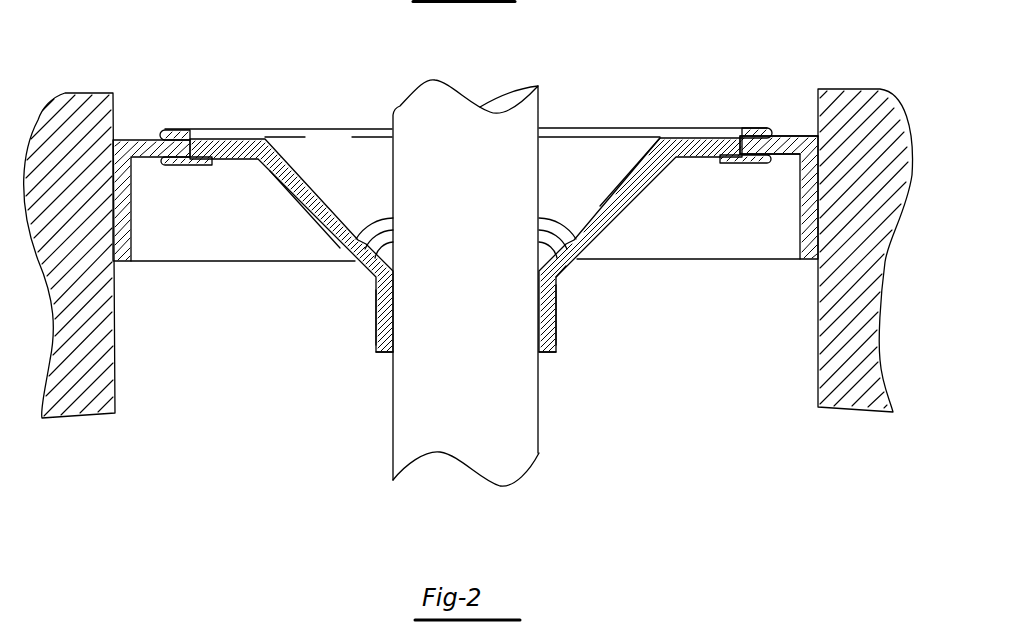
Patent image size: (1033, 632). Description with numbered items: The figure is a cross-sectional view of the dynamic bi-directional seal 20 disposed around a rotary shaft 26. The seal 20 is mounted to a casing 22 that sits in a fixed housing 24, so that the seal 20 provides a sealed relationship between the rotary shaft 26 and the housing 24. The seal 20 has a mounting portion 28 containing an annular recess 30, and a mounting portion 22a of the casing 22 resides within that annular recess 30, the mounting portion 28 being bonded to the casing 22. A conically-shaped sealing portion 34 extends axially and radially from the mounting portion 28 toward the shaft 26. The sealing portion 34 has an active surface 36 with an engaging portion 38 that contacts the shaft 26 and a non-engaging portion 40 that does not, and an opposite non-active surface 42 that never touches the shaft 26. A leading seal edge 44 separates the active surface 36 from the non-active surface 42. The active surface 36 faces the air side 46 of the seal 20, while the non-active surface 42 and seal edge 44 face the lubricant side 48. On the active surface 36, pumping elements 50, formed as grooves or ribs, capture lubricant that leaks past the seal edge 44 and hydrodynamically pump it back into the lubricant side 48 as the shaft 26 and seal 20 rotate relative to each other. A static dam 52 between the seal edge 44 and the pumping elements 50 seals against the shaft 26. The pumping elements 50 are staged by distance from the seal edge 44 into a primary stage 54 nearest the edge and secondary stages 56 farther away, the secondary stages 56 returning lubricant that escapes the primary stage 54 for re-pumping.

The dynamic bi-directional seal 20 is at (653, 40).
The casing 22 is at (807, 250).
The mounting portion of casing 22a is at (757, 148).
The fixed housing 24 is at (825, 360).
The rotary shaft 26 is at (517, 463).
The mounting portion 28 is at (734, 127).
The annular recess 30 is at (738, 152).
The sealing portion 34 is at (636, 197).
The active surface 36 is at (334, 207).
The engaging portion 38 is at (517, 305).
The non-engaging portion 40 is at (575, 237).
The non-active surface 42 is at (320, 232).
The seal edge 44 is at (547, 355).
The air side 46 is at (251, 104).
The lubricant side 48 is at (255, 331).
The pumping elements 50 is at (380, 299).
The static dam 52 is at (395, 351).
The primary stage 54 is at (571, 327).
The secondary stages 56 is at (580, 272).